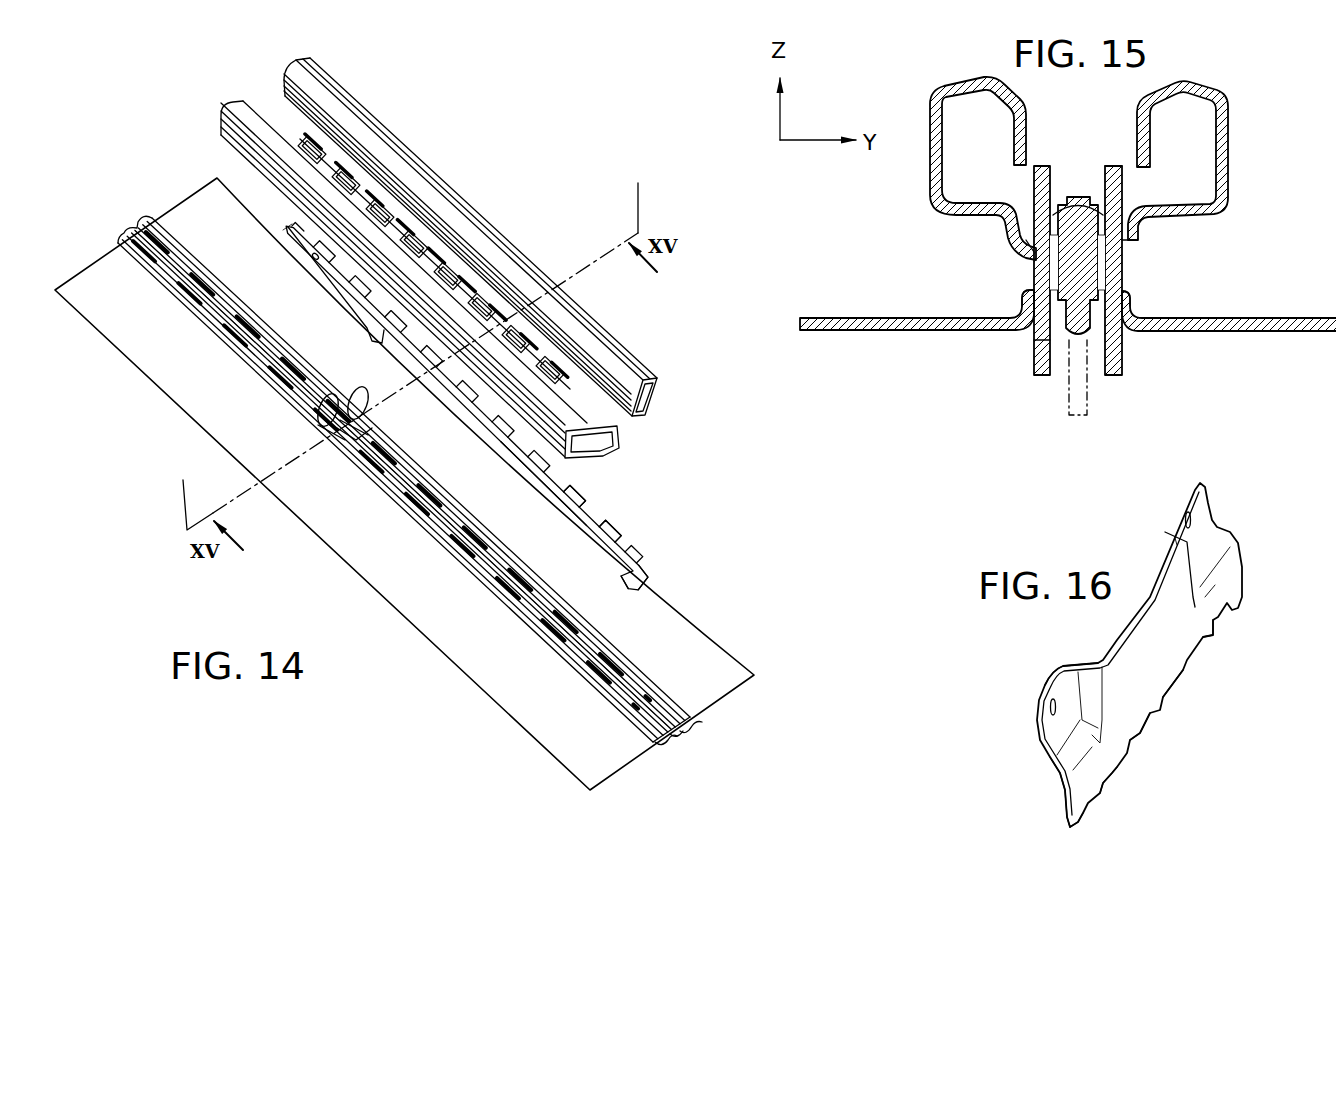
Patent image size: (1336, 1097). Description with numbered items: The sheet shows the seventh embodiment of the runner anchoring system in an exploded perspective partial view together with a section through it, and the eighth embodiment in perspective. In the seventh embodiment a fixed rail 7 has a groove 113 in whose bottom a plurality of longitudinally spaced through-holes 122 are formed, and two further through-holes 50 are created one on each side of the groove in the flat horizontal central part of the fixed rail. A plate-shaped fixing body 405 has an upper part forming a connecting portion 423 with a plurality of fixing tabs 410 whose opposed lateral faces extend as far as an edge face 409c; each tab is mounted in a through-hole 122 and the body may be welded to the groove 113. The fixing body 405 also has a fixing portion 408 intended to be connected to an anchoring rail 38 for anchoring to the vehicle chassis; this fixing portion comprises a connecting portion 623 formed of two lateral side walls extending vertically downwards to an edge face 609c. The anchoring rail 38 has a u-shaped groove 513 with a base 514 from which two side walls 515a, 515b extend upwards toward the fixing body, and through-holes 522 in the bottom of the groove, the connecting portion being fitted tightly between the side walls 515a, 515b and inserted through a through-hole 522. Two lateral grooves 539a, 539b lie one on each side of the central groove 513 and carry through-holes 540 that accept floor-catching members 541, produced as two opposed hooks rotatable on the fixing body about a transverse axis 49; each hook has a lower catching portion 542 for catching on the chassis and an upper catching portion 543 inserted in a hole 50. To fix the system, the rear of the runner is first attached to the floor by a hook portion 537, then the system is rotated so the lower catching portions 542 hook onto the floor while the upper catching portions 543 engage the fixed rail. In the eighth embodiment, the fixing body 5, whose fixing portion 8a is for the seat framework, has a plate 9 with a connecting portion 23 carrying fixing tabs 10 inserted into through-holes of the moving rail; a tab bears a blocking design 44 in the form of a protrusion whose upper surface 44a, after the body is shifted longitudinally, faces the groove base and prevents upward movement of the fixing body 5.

In FIG. 14, the fixed rail 7 is at (646, 347).
In FIG. 15, the fixed rail 7 is at (1258, 117).
In FIG. 14, the anchoring rail 38 is at (722, 666).
In FIG. 15, the anchoring rail 38 is at (1281, 340).
In FIG. 14, the through-holes 540 is at (213, 280).
In FIG. 14, the through-holes 522 is at (560, 645).
In FIG. 14, the lateral groove 539a is at (667, 749).
In FIG. 15, the lateral groove 539a is at (1036, 292).
In FIG. 14, the groove 513 is at (678, 736).
In FIG. 15, the groove 513 is at (1098, 288).
In FIG. 14, the lateral groove 539b is at (694, 730).
In FIG. 15, the lateral groove 539b is at (1132, 300).
In FIG. 14, the connecting portion 623 is at (372, 340).
In FIG. 14, the connecting portion 423 is at (290, 217).
In FIG. 14, the edge face 409c is at (582, 485).
In FIG. 14, the fixing tabs 410 is at (614, 515).
In FIG. 14, the fixing body 405 is at (642, 560).
In FIG. 14, the hook portion 537 is at (652, 570).
In FIG. 14, the fixing portion 408 is at (552, 492).
In FIG. 14, the groove 113 is at (619, 443).
In FIG. 14, the through-holes 122 is at (560, 362).
In FIG. 14, the floor-catching members 541 is at (382, 406).
In FIG. 14, the edge face 609c is at (372, 406).
In FIG. 15, the side wall 515a is at (1049, 372).
In FIG. 15, the side wall 515b is at (1115, 368).
In FIG. 15, the base 514 is at (1078, 338).
In FIG. 15, the upper catching portion 543 is at (1112, 168).
In FIG. 15, the axis 49 is at (1027, 258).
In FIG. 15, the through-holes 50 is at (1128, 241).
In FIG. 15, the lower catching portion 542 is at (1038, 340).
In FIG. 16, the fixing body 5 is at (1020, 742).
In FIG. 16, the fixing portion 8a is at (1052, 698).
In FIG. 16, the connecting portion 23 is at (1053, 814).
In FIG. 16, the fixing tabs 10 is at (1074, 823).
In FIG. 16, the blocking design 44 is at (1112, 772).
In FIG. 16, the upper surface 44a is at (1140, 733).
In FIG. 16, the plate 9 is at (1155, 660).